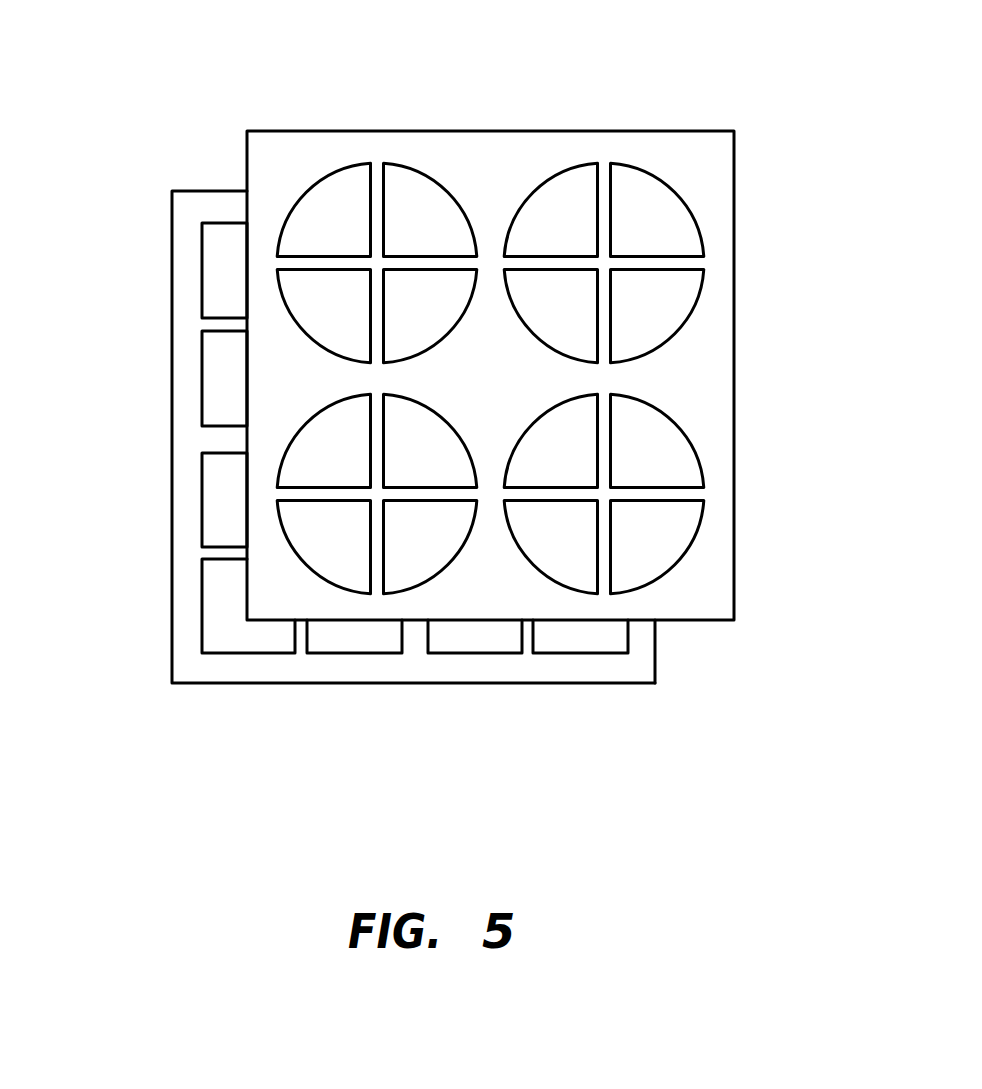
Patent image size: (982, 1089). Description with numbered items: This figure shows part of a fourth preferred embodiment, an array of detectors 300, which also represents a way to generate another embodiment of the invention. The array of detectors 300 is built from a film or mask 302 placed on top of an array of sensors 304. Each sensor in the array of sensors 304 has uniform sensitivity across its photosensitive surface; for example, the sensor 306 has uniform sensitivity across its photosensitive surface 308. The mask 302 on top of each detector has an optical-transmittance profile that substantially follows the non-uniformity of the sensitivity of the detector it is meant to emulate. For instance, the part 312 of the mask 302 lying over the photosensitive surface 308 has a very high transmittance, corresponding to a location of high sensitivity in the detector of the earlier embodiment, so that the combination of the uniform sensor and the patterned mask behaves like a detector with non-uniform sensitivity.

The array of detectors 300 is at (463, 370).
The mask 302 is at (556, 323).
The array of sensors 304 is at (657, 653).
The sensor 306 is at (202, 260).
The photosensitive surface 308 is at (227, 253).
The part of the mask 312 is at (357, 242).